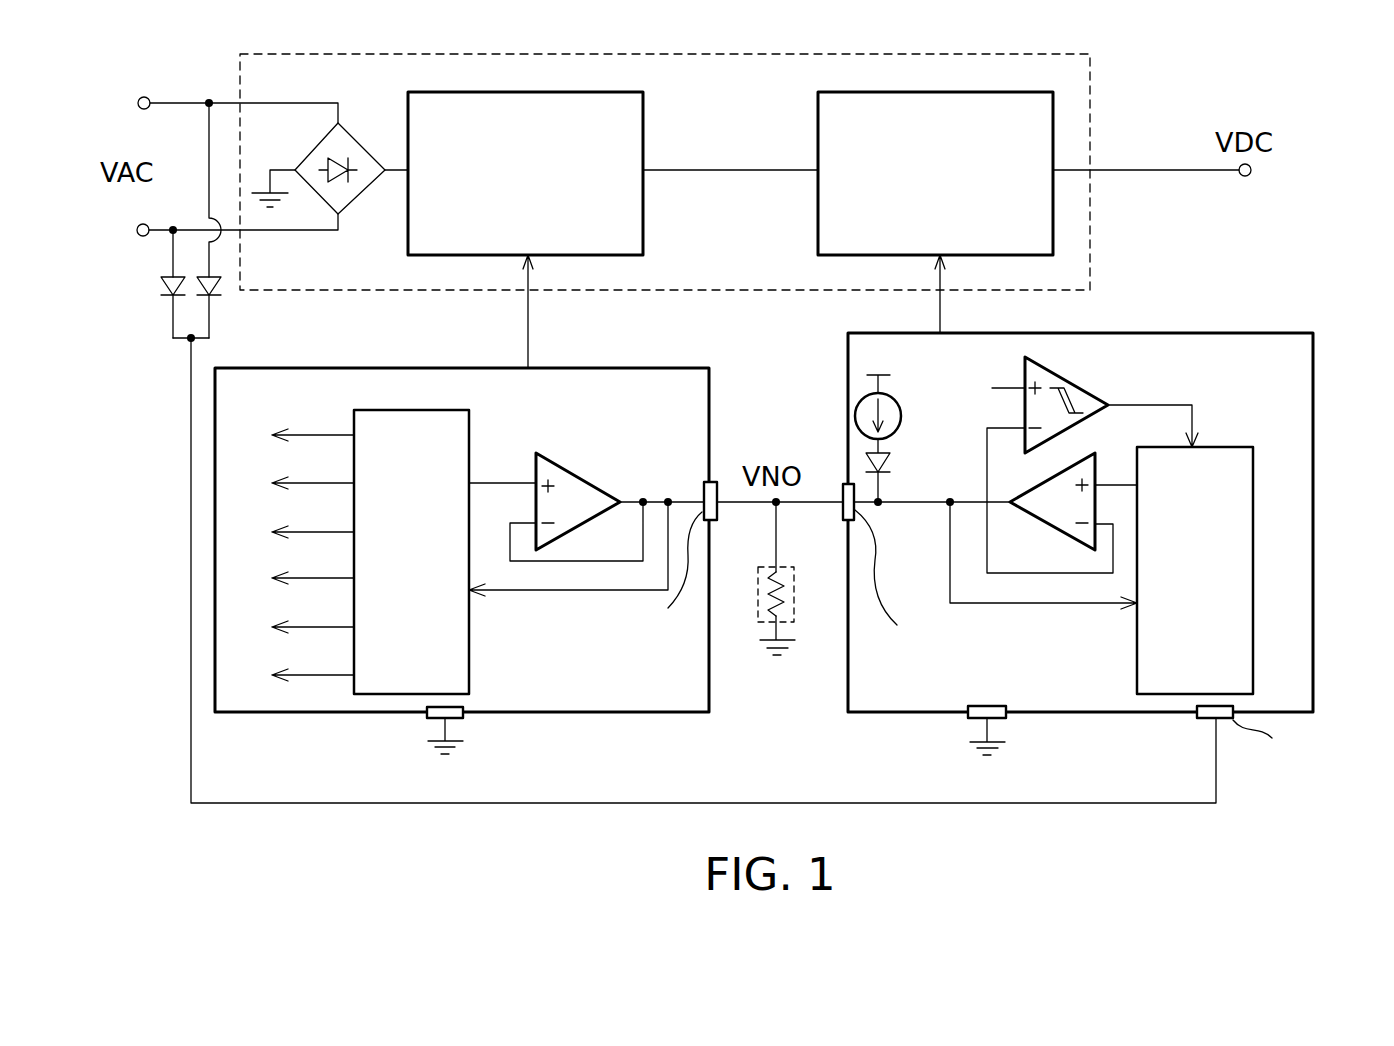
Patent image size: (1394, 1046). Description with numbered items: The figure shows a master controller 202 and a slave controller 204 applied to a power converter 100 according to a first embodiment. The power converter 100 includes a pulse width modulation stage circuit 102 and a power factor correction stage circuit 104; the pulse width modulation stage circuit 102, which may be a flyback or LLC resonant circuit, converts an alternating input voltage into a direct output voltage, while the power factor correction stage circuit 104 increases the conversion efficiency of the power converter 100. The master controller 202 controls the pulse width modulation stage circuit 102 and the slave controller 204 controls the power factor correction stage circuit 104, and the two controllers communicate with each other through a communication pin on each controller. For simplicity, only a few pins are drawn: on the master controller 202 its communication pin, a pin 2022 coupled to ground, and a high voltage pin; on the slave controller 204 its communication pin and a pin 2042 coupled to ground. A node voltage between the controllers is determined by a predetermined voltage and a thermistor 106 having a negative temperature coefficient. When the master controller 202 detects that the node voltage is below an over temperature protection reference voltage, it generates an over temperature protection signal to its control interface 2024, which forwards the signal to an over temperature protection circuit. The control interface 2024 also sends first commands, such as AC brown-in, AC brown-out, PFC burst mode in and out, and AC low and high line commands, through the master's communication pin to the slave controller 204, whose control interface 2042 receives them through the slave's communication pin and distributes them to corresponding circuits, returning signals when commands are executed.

The power converter 100 is at (1090, 92).
The pulse width modulation stage circuit 102 is at (928, 92).
The power factor correction stage circuit 104 is at (527, 92).
The thermistor 106 is at (795, 603).
The master controller 202 is at (1313, 395).
The slave controller 204 is at (640, 368).
The pin 2022 is at (995, 707).
The control interface 2024 is at (1233, 447).
The control interface 2042 is at (469, 432).